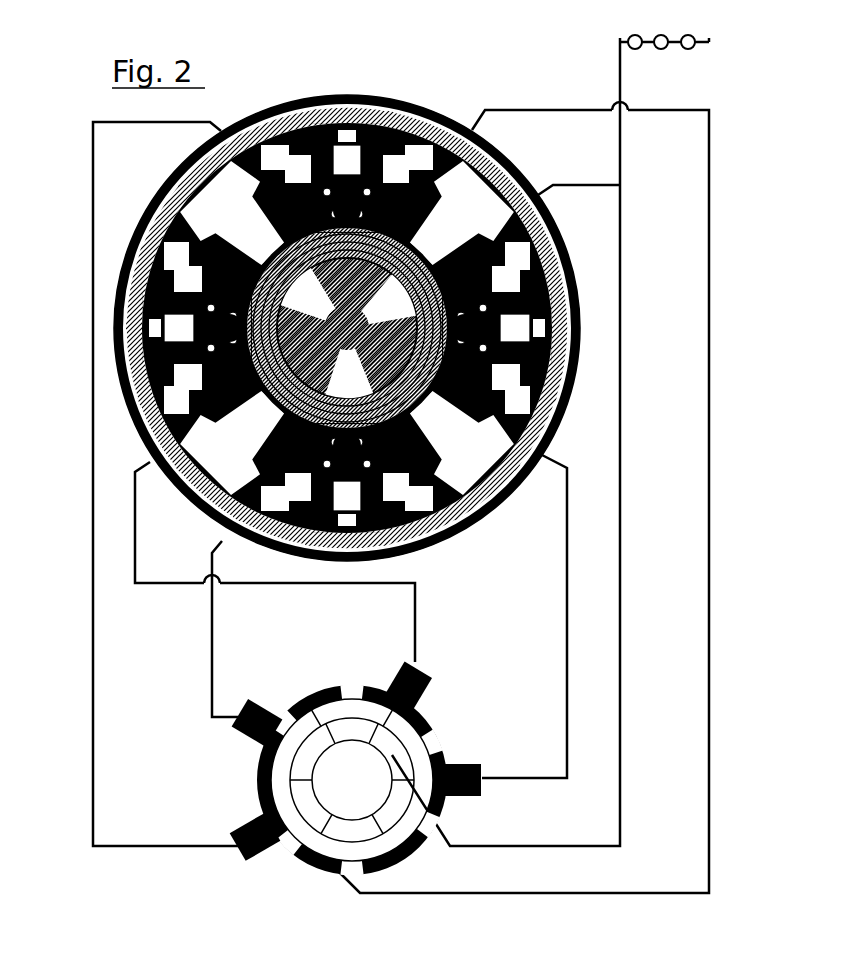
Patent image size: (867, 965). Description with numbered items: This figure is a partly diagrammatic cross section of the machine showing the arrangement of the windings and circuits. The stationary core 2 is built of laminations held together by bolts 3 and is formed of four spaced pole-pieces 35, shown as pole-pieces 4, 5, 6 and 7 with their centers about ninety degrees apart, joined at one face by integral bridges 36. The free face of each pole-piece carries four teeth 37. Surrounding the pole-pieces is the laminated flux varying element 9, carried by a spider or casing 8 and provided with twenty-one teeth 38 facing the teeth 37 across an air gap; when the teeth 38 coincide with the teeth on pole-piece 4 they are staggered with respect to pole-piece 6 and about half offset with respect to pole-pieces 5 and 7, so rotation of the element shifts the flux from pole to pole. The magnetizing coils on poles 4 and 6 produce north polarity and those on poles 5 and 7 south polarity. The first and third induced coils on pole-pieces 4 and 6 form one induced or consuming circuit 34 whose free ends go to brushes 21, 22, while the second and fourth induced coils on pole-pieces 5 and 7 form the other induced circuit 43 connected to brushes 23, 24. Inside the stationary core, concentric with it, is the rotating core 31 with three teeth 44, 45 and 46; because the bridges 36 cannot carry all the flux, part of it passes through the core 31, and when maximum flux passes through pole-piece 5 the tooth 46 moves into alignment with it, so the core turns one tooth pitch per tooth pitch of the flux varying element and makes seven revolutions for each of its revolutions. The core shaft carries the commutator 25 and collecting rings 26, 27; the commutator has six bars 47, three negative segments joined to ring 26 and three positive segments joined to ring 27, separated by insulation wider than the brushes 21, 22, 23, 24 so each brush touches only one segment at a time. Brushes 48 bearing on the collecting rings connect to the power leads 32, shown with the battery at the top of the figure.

The stationary core 2 is at (456, 542).
The bolts 3 is at (270, 100).
The pole-piece 4 is at (397, 110).
The pole-piece 5 is at (126, 322).
The pole-piece 6 is at (318, 525).
The pole-piece 7 is at (565, 280).
The spider or casing 8 is at (565, 375).
The flux varying element 9 is at (337, 96).
The brush 21 is at (262, 707).
The brush 22 is at (259, 858).
The brush 23 is at (484, 768).
The brush 24 is at (428, 673).
The commutator 25 is at (352, 780).
The collecting ring 26 is at (382, 814).
The collecting ring 27 is at (336, 843).
The rotating element (core) 31 is at (347, 328).
The power leads 32 is at (709, 725).
The induced or consuming circuit 34 is at (212, 635).
The pole-pieces 35 is at (560, 252).
The bridges 36 is at (347, 328).
The teeth or projections 37 is at (436, 120).
The teeth or projections 38 is at (498, 168).
The induced circuit 43 is at (567, 607).
The tooth 44 is at (308, 294).
The tooth 45 is at (388, 299).
The tooth 46 is at (312, 311).
The bars (commutator segments) 47 is at (260, 768).
The brushes 48 is at (395, 758).